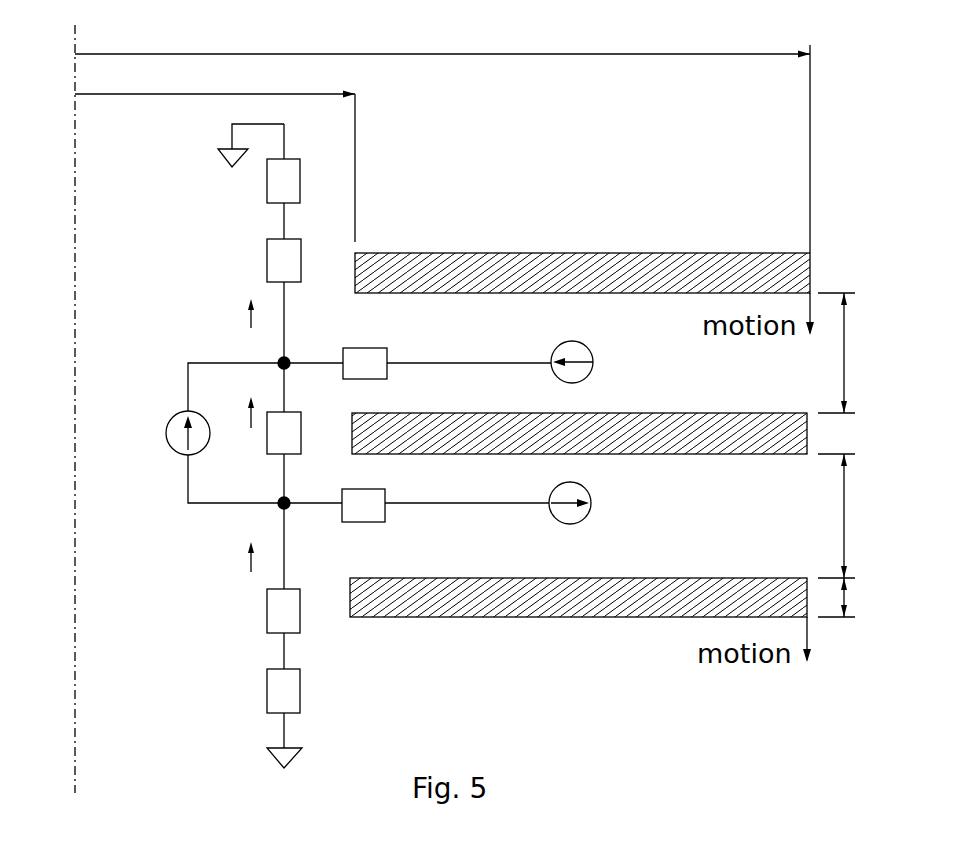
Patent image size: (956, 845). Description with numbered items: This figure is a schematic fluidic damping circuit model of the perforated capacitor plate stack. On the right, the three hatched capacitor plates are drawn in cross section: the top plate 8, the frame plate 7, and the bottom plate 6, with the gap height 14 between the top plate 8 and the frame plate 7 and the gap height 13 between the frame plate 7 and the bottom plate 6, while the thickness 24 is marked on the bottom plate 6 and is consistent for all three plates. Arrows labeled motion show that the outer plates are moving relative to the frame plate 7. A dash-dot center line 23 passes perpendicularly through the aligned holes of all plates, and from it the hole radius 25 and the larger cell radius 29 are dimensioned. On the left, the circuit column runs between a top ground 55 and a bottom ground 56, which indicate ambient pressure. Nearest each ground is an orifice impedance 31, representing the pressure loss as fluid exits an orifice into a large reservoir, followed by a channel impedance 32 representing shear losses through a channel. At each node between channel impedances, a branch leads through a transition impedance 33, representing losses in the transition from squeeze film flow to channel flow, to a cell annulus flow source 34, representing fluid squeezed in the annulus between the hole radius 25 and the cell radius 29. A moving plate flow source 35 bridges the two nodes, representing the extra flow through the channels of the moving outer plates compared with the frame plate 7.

The center line 23 is at (76, 427).
The cell radius 29 is at (442, 139).
The hole radius 25 is at (215, 153).
The top plate 8 is at (737, 253).
The frame plate 7 is at (720, 413).
The bottom plate 6 is at (720, 578).
The gap height 14 is at (853, 353).
The gap height 13 is at (853, 516).
The thickness 24 is at (853, 597).
The orifice impedance 31 is at (267, 178).
The channel impedance 32 is at (267, 262).
The transition impedance 33 is at (365, 348).
The cell annulus flow source 34 is at (580, 342).
The moving plate flow source 35 is at (172, 448).
The top ground 55 is at (216, 151).
The bottom ground 56 is at (267, 752).